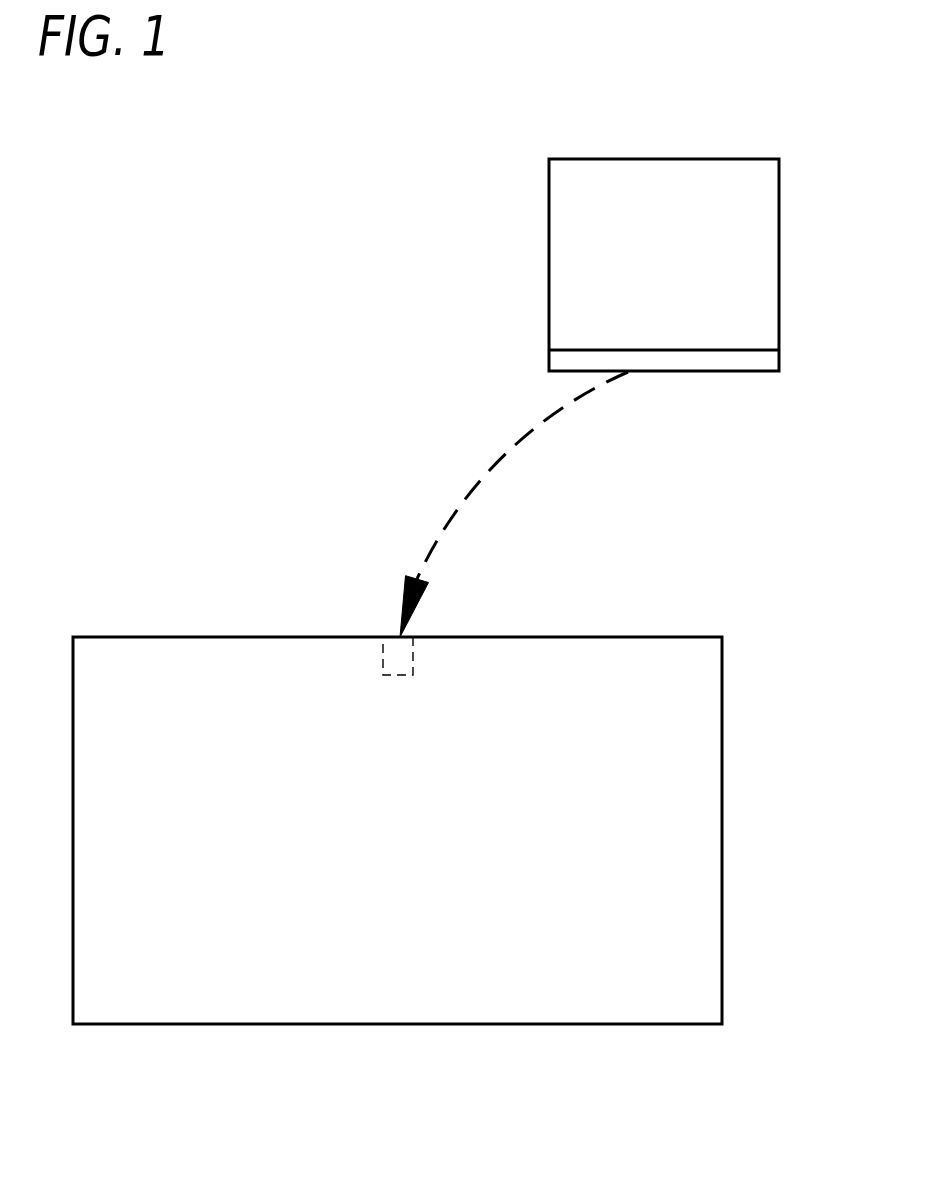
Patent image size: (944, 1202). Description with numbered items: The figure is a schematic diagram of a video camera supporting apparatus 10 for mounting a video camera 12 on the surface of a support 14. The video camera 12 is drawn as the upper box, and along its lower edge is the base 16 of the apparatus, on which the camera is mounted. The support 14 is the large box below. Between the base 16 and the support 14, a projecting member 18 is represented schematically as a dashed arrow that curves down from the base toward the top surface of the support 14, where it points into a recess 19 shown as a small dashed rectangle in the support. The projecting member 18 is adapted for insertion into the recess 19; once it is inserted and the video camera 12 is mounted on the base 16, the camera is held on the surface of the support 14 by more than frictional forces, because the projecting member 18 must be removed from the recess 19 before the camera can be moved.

The video camera supporting apparatus 10 is at (828, 343).
The video camera 12 is at (780, 175).
The support 14 is at (722, 678).
The base 16 is at (549, 362).
The projecting member 18 is at (513, 450).
The recess 19 is at (373, 623).